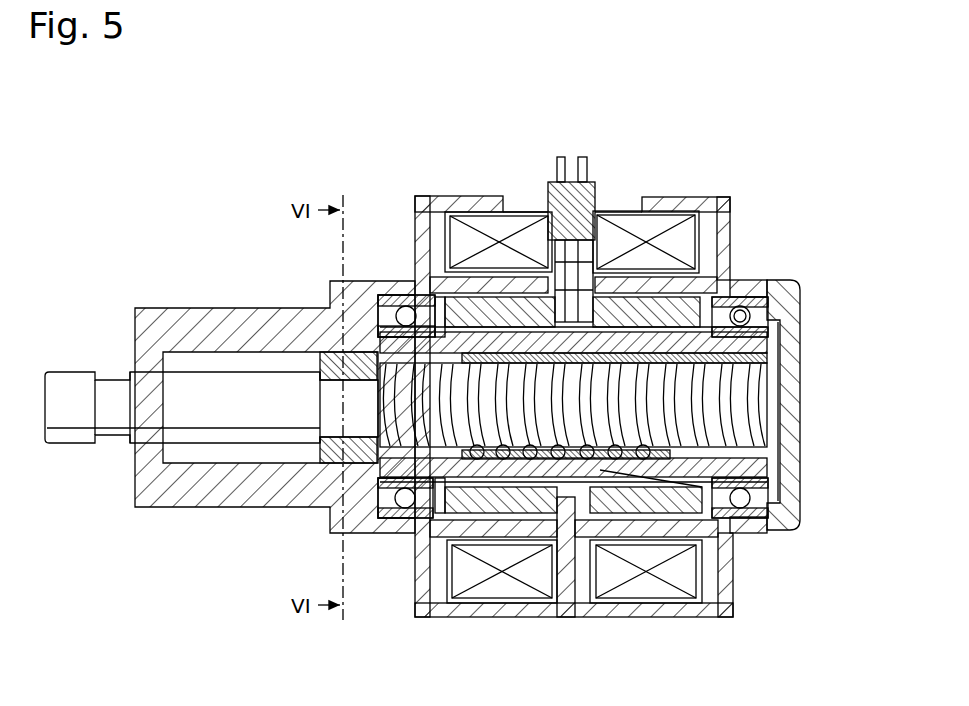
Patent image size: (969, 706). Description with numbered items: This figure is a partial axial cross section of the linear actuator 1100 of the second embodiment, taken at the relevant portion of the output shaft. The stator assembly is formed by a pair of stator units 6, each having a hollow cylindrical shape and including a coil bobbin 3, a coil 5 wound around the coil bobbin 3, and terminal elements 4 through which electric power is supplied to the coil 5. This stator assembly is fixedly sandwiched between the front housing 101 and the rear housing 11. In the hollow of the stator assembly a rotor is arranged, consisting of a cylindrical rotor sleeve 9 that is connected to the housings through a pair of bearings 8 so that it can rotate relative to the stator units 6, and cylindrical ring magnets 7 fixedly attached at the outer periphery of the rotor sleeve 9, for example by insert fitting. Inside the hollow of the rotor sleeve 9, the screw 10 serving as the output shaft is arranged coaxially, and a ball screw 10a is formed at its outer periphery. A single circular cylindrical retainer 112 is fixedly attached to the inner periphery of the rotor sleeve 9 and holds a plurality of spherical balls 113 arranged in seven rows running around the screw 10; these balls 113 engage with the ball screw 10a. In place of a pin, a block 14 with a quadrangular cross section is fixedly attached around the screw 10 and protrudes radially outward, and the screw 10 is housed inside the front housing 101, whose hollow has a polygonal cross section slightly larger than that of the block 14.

The linear actuator 1100 is at (155, 167).
The front housing 101 is at (307, 488).
The block 14 is at (347, 350).
The coil bobbin 3 is at (548, 200).
The terminal elements 4 is at (557, 162).
The coil 5 is at (612, 235).
The stator units 6 is at (672, 200).
The ring magnets 7 is at (662, 306).
The bearings 8 is at (752, 297).
The rotor sleeve 9 is at (744, 316).
The screw 10 is at (718, 412).
The ball screw 10a is at (773, 377).
The rear housing 11 is at (793, 448).
The retainer 112 is at (700, 457).
The balls 113 is at (600, 465).